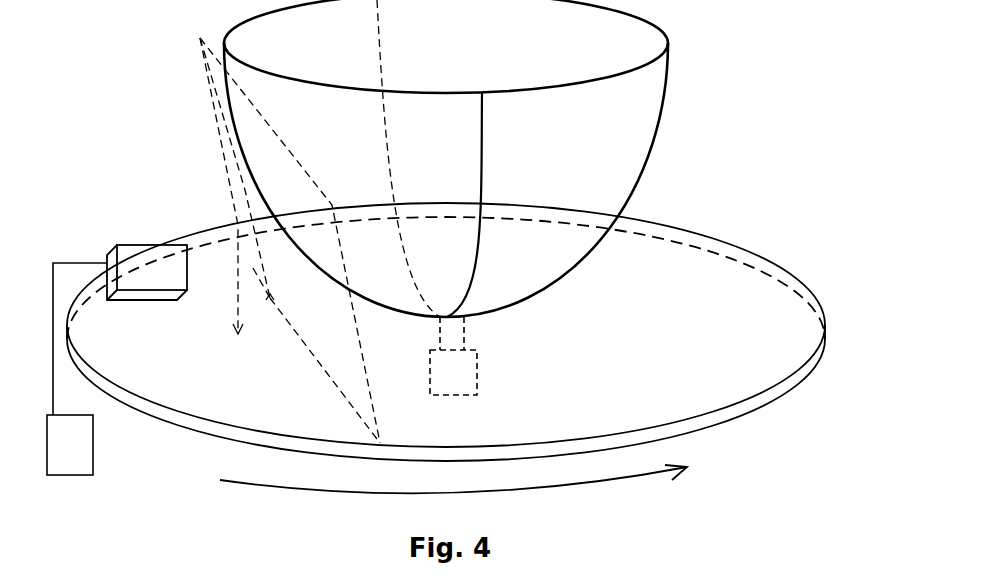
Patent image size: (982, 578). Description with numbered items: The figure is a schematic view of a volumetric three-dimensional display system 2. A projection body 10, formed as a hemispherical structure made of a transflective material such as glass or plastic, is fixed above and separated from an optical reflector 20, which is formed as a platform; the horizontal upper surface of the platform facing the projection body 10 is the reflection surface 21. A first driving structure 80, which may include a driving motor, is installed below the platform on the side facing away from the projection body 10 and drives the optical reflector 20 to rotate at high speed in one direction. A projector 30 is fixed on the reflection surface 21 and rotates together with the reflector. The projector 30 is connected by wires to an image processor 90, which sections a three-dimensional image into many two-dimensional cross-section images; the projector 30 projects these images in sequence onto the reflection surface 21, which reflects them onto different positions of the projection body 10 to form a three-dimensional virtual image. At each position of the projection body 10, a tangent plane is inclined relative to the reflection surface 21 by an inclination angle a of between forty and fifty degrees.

The three-dimensional display system 2 is at (127, 80).
The projection body 10 is at (648, 162).
The optical reflector 20 is at (733, 425).
The reflection surface 21 is at (723, 342).
The projector 30 is at (143, 263).
The first driving structure 80 is at (477, 370).
The image processor 90 is at (93, 457).
The inclination angle a is at (258, 299).